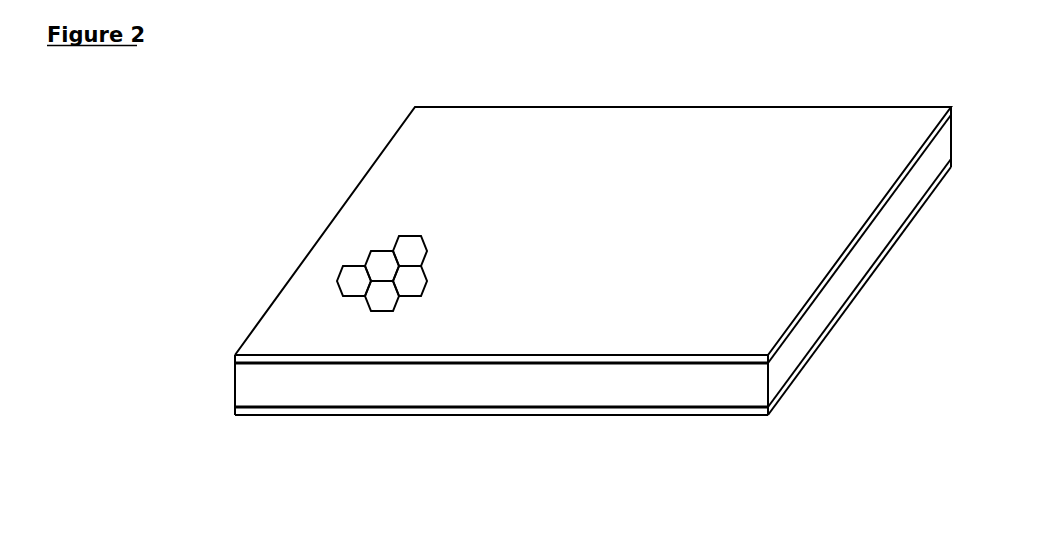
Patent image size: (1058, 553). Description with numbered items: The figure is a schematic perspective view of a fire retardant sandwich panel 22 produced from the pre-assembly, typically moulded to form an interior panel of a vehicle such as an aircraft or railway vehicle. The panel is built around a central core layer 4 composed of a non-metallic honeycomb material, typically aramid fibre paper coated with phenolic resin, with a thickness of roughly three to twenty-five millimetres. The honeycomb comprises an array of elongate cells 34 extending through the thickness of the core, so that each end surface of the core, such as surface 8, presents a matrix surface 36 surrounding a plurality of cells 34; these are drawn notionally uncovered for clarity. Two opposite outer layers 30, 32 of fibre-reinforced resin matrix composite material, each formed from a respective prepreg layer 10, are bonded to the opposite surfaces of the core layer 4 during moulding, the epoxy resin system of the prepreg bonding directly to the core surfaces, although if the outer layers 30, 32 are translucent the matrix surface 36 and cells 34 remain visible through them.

The sandwich panel 22 is at (152, 136).
The core layer 4 is at (464, 388).
The surface of the core layer 8 is at (370, 407).
The prepreg layer 10 is at (648, 367).
The outer layer 30 is at (569, 410).
The outer layer 32 is at (692, 355).
The cells 34 is at (352, 284).
The matrix surface 36 is at (374, 255).